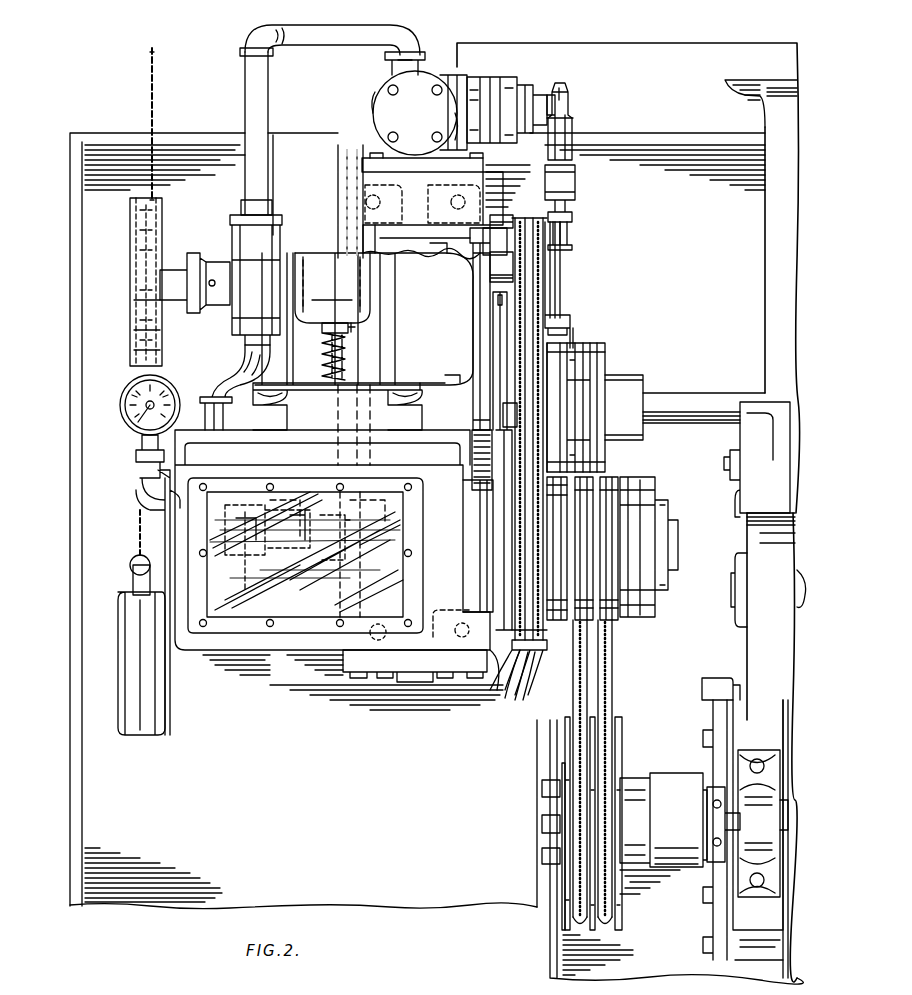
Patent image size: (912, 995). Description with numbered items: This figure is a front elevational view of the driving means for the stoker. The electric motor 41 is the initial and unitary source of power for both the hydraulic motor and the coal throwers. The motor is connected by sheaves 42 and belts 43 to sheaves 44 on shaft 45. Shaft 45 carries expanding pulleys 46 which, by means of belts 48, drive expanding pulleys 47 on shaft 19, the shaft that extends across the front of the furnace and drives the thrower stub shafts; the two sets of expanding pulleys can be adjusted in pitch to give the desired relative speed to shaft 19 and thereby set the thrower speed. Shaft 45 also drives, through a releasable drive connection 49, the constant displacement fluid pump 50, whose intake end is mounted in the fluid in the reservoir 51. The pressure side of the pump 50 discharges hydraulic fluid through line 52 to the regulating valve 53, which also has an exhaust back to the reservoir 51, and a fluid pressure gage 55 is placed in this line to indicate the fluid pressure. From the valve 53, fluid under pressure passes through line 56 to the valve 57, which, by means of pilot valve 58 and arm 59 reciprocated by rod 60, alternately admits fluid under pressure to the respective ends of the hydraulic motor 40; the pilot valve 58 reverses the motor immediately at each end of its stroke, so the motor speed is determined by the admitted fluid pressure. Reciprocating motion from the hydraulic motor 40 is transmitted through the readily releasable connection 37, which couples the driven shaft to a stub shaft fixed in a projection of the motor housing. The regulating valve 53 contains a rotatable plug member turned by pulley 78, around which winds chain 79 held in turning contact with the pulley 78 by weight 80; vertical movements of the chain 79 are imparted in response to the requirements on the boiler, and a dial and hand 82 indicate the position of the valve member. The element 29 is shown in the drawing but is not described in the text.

The shaft 19 is at (712, 826).
The drive shaft 29 is at (712, 392).
The readily releasable connection 37 is at (582, 348).
The hydraulic motor 40 is at (453, 388).
The electric motor 41 is at (458, 320).
The sheaves 42 is at (555, 250).
The belts 43 is at (540, 316).
The sheaves 44 is at (528, 660).
The shaft 45 is at (679, 545).
The expanding pulleys 46 is at (578, 505).
The expanding pulleys 47 is at (600, 742).
The belts 48 is at (588, 705).
The releasable drive connection 49 is at (305, 555).
The constant displacement fluid pump 50 is at (245, 555).
The reservoir 51 is at (207, 640).
The line 52 is at (200, 405).
The regulating valve 53 is at (256, 280).
The fluid pressure gage 55 is at (127, 432).
The line 56 is at (248, 107).
The valve 57 is at (440, 113).
The pilot valve 58 is at (472, 92).
The arm 59 is at (567, 150).
The rod 60 is at (560, 235).
The pulley 78 is at (160, 220).
The chain 79 is at (153, 100).
The weight 80 is at (146, 737).
The hand 82 is at (183, 242).